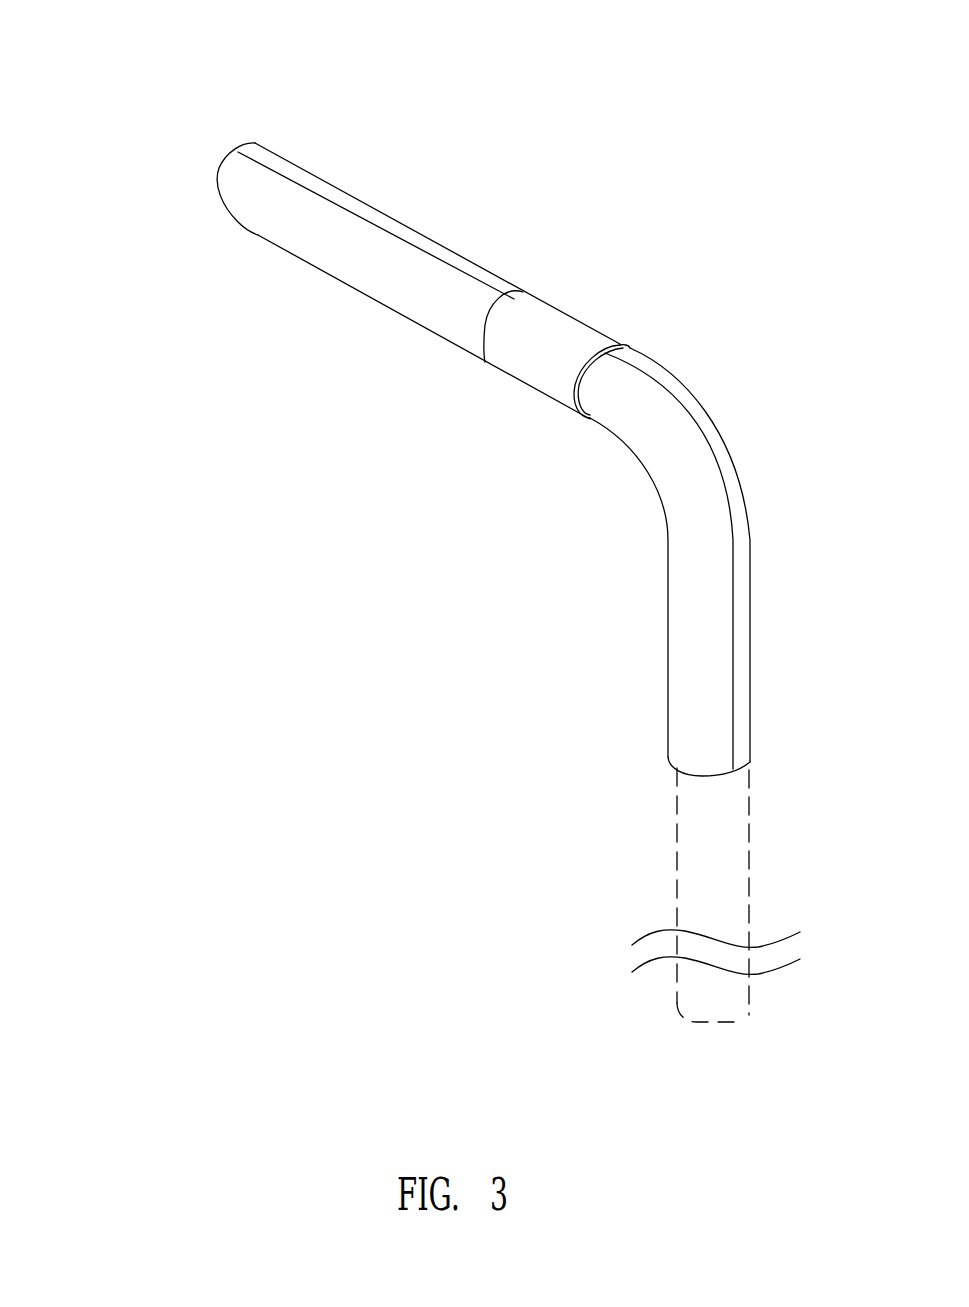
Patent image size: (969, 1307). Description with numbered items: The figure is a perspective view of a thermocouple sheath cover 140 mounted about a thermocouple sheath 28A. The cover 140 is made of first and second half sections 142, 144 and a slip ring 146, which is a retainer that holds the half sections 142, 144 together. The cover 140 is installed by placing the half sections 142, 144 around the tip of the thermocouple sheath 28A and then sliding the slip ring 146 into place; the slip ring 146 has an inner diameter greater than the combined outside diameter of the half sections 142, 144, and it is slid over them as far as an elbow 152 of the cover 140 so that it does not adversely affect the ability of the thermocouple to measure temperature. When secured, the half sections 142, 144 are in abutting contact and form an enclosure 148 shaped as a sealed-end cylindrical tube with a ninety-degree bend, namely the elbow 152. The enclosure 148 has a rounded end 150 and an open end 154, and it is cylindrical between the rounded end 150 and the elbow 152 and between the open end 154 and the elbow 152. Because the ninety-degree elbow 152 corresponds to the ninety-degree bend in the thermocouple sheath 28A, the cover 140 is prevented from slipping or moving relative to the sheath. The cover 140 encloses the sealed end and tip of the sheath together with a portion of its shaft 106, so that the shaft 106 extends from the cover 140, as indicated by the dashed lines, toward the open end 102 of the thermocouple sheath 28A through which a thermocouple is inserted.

The thermocouple sheath cover 140 is at (160, 52).
The first half section 142 is at (336, 279).
The second half section 144 is at (413, 229).
The slip ring 146 is at (590, 323).
The enclosure 148 is at (238, 128).
The rounded end 150 is at (247, 141).
The elbow 152 is at (720, 435).
The open end 154 is at (750, 762).
The shaft 106 is at (679, 836).
The thermocouple sheath 28A is at (752, 882).
The open end 102 is at (738, 1022).